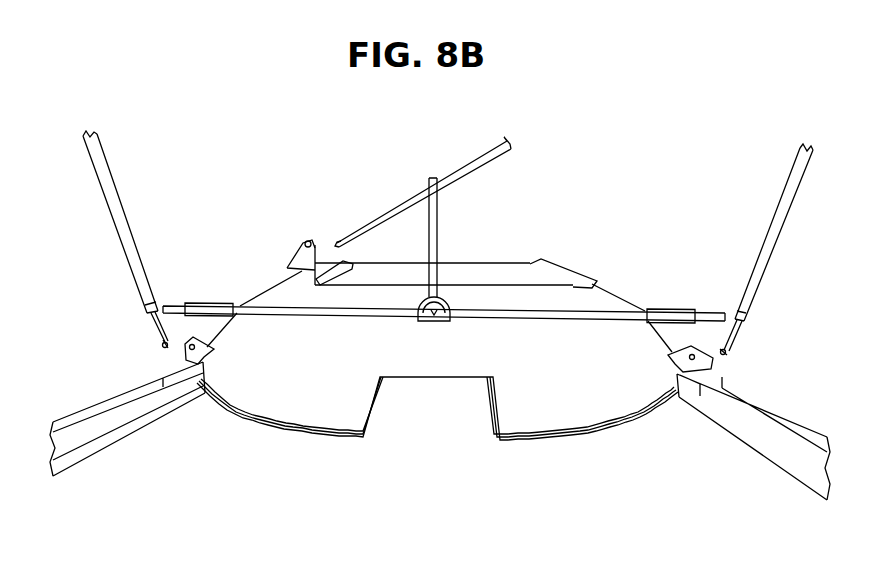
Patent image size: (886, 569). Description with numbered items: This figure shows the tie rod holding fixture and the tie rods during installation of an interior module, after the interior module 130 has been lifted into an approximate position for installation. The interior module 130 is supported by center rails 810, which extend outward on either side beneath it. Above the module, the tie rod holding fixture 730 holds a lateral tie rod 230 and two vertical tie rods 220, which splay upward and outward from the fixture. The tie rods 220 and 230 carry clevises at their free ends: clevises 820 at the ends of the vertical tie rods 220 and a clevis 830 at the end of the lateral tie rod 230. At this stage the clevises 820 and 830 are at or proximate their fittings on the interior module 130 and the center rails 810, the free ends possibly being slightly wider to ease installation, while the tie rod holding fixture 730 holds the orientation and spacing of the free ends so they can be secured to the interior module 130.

The interior module 130 is at (574, 472).
The vertical tie rods 220 is at (111, 180).
The lateral tie rod 230 is at (483, 159).
The tie rod holding fixture 730 is at (648, 304).
The center rails 810 is at (108, 438).
The clevises 820 is at (163, 345).
The clevis 830 is at (338, 240).